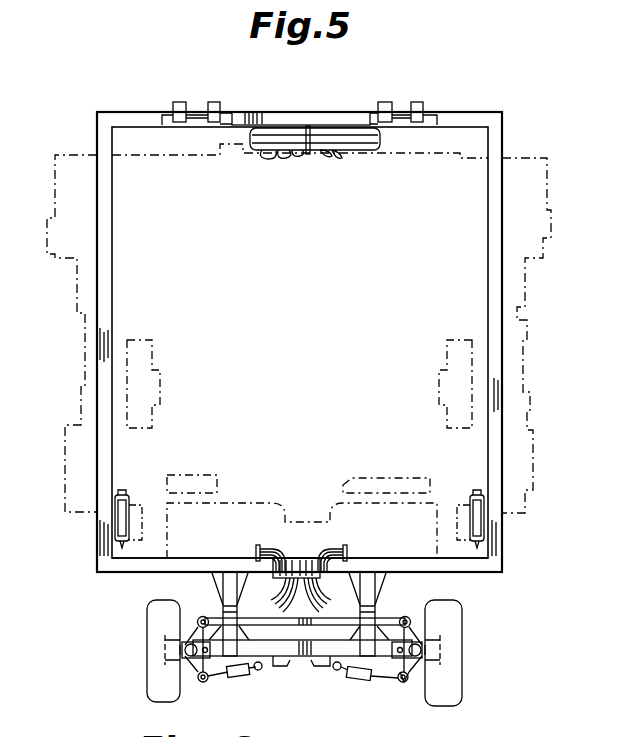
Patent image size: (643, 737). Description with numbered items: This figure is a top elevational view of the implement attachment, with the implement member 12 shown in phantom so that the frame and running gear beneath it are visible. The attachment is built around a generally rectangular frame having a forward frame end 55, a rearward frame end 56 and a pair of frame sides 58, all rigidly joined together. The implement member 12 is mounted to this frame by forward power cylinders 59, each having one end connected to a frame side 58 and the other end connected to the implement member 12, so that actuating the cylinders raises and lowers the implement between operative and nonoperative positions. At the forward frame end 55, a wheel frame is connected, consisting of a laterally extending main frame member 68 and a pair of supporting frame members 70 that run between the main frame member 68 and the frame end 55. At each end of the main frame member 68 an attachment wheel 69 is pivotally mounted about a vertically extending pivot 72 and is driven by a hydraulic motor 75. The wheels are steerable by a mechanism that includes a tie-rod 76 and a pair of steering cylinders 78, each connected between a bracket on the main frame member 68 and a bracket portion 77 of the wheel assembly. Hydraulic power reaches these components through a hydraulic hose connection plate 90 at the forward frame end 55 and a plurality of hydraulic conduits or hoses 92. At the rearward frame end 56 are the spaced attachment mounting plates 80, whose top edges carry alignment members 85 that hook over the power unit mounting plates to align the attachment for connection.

The implement member 12 is at (535, 290).
The forward frame end 55 is at (374, 572).
The rearward frame end 56 is at (473, 118).
The frame sides 58 is at (107, 320).
The forward power cylinders 59 is at (115, 520).
The main frame member 68 is at (300, 657).
The attachment wheels 69 is at (448, 620).
The supporting frame members 70 is at (385, 605).
The vertically extending pivot 72 is at (427, 672).
The hydraulic motor 75 is at (447, 632).
The tie-rod 76 is at (268, 605).
The bracket portion 77 is at (415, 675).
The steering cylinders 78 is at (400, 673).
The attachment mounting plates 80 is at (227, 113).
The alignment members 85 is at (180, 102).
The hydraulic hose connection plate 90 is at (283, 560).
The hydraulic conduits or hoses 92 is at (320, 560).